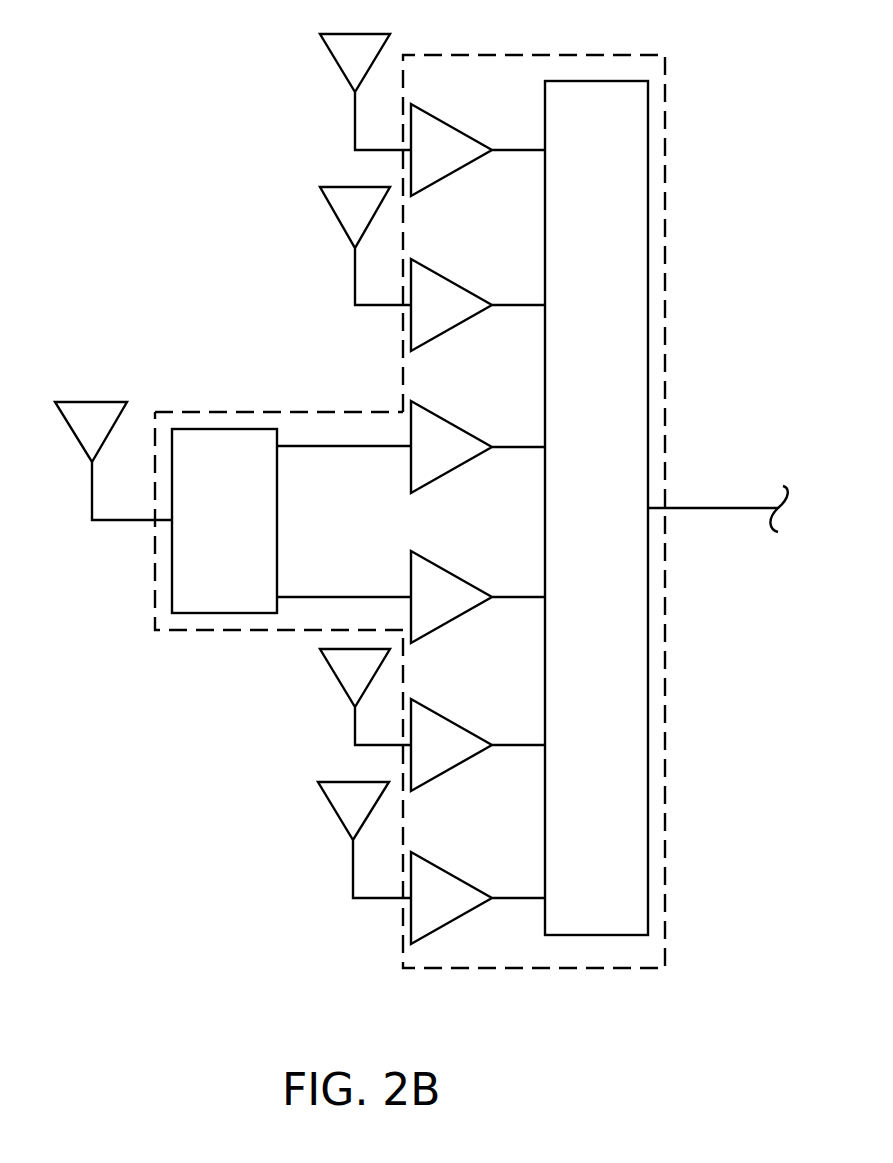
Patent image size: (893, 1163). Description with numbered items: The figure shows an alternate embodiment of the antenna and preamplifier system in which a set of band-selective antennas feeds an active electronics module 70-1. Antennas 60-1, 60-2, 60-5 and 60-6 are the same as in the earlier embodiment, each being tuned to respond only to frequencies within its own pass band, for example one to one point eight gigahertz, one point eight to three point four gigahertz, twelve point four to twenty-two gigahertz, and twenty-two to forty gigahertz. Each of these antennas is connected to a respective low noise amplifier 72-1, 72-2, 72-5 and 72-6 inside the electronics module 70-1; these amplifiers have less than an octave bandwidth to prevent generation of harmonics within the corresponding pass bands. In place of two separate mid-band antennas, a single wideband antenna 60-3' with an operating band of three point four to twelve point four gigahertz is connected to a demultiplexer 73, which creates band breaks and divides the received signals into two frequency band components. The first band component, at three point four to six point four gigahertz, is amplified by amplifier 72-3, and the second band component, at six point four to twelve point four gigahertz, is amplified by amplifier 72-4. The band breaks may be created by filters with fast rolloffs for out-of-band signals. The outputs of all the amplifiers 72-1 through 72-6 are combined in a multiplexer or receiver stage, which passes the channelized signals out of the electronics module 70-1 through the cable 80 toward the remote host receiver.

The antenna 60-1 is at (348, 80).
The antenna 60-2 is at (348, 236).
The antenna 60-3' is at (97, 446).
The antenna 60-5 is at (348, 696).
The antenna 60-6 is at (344, 824).
The low noise amplifier 72-1 is at (432, 115).
The low noise amplifier 72-2 is at (432, 270).
The amplifier 72-3 is at (432, 412).
The amplifier 72-4 is at (432, 562).
The low noise amplifier 72-5 is at (432, 710).
The low noise amplifier 72-6 is at (432, 863).
The demultiplexer 73 is at (278, 518).
The electronics module 70-1 is at (665, 118).
The cable 80 is at (750, 508).